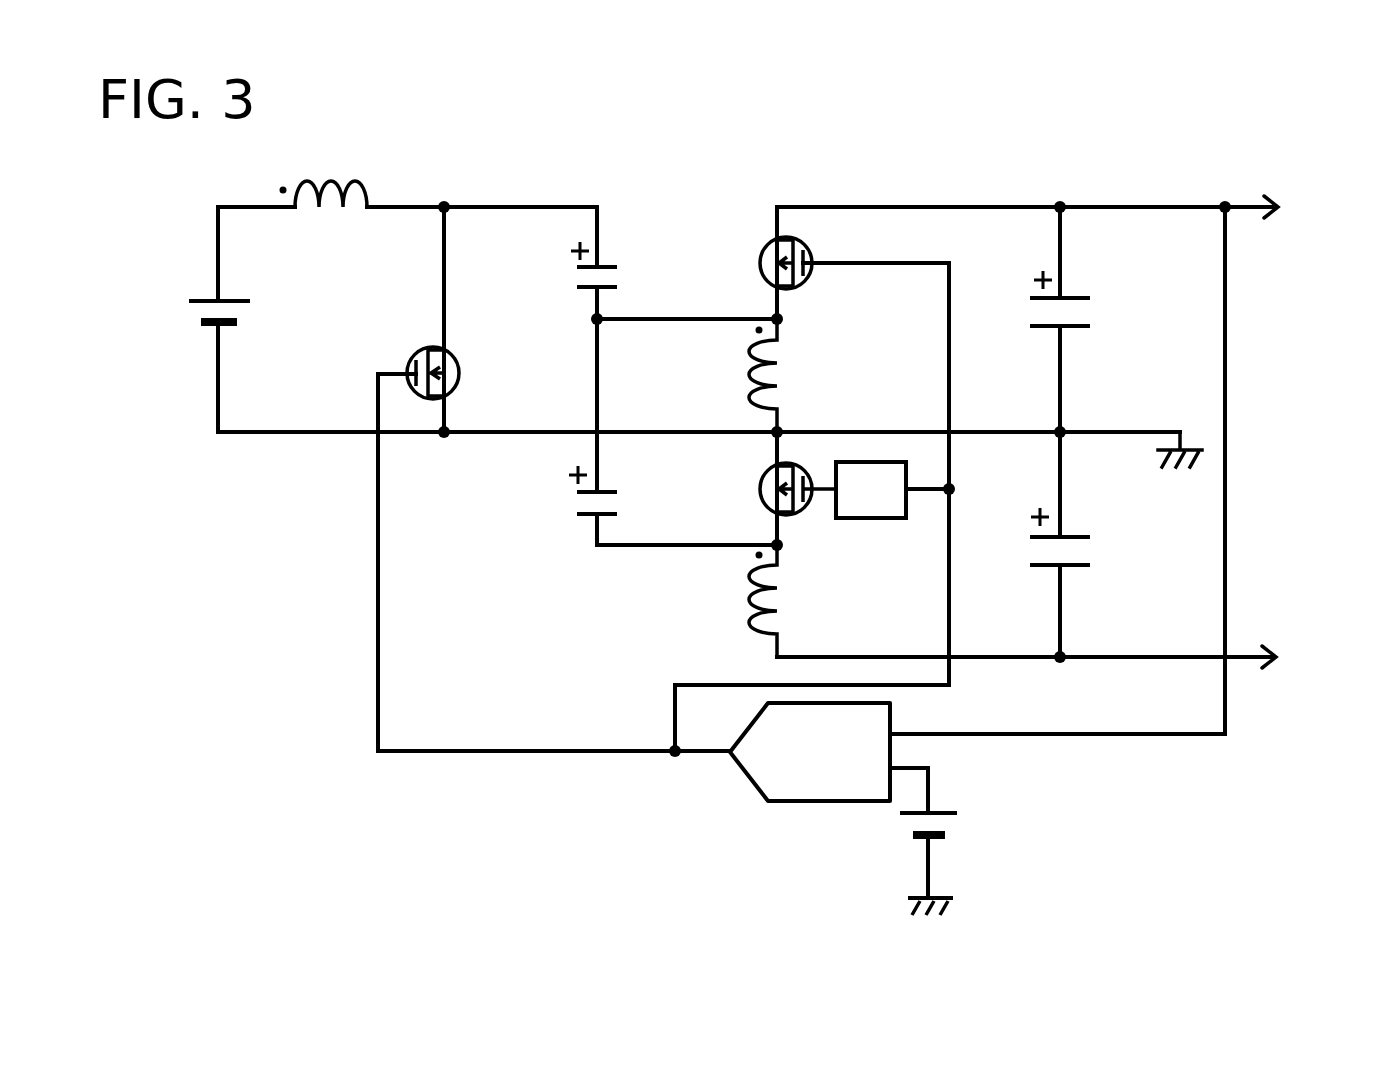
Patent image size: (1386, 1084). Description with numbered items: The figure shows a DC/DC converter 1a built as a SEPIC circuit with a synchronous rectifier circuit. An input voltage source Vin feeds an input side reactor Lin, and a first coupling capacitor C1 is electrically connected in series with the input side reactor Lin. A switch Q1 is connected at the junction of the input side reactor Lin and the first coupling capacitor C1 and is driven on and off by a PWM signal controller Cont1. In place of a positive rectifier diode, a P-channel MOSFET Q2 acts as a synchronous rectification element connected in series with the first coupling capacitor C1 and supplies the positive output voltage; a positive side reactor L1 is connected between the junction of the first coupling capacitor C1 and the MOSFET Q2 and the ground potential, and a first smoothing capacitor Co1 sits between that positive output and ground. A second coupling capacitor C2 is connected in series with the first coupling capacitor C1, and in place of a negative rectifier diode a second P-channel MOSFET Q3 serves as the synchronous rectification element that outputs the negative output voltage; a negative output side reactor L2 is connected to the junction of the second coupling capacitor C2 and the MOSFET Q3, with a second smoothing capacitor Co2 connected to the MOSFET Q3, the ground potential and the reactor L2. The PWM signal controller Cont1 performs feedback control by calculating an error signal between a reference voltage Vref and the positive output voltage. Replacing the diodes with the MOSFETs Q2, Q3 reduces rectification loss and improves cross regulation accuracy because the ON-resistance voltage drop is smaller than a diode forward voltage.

The DC/DC converter 1a is at (793, 449).
The input side reactor Lin is at (324, 176).
The input voltage source Vin is at (241, 319).
The switch Q1 is at (456, 319).
The first coupling capacitor C1 is at (577, 263).
The second coupling capacitor C2 is at (577, 432).
The P-channel MOSFET Q2 is at (764, 263).
The P-channel MOSFET Q3 is at (776, 488).
The positive side reactor L1 is at (783, 375).
The negative output side reactor L2 is at (783, 601).
The first smoothing capacitor Co1 is at (1074, 319).
The second smoothing capacitor Co2 is at (1077, 544).
The PWM signal controller Cont1 is at (855, 804).
The reference voltage Vref is at (954, 860).